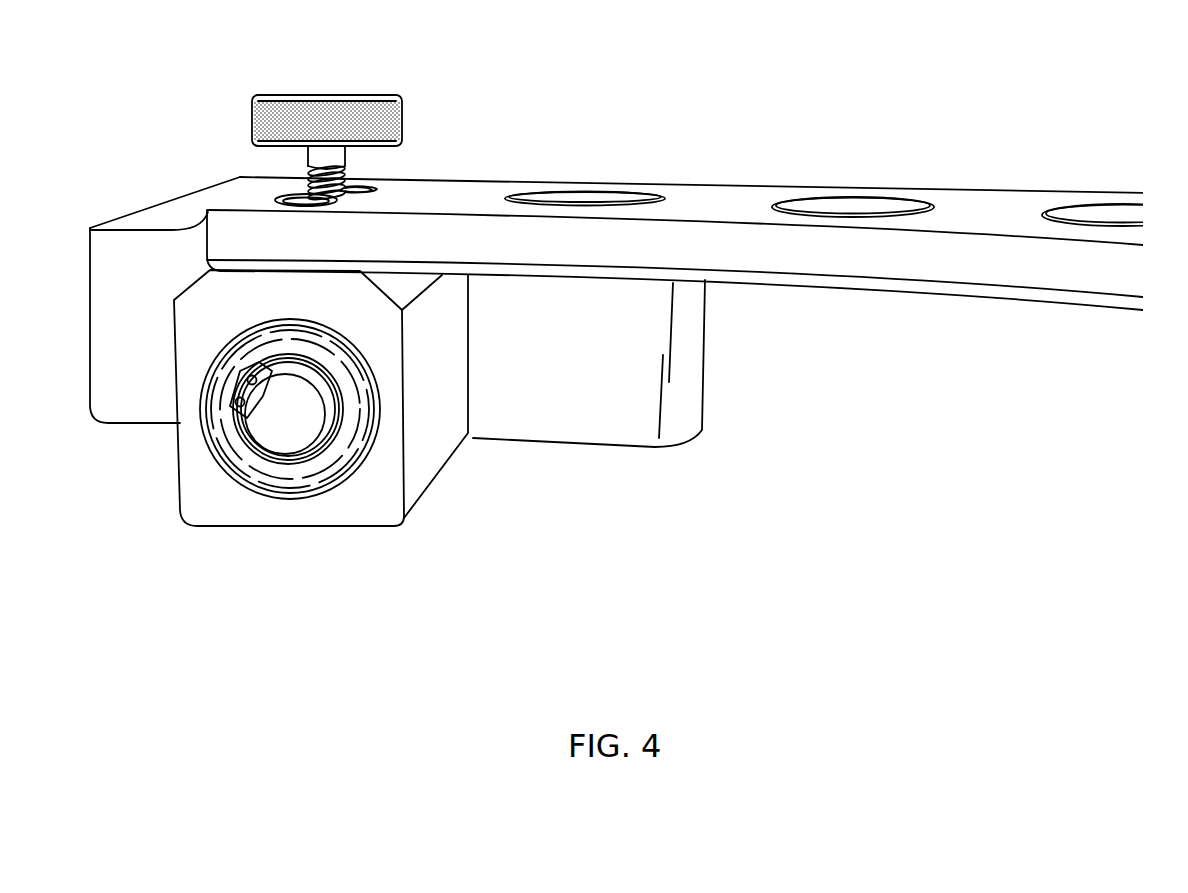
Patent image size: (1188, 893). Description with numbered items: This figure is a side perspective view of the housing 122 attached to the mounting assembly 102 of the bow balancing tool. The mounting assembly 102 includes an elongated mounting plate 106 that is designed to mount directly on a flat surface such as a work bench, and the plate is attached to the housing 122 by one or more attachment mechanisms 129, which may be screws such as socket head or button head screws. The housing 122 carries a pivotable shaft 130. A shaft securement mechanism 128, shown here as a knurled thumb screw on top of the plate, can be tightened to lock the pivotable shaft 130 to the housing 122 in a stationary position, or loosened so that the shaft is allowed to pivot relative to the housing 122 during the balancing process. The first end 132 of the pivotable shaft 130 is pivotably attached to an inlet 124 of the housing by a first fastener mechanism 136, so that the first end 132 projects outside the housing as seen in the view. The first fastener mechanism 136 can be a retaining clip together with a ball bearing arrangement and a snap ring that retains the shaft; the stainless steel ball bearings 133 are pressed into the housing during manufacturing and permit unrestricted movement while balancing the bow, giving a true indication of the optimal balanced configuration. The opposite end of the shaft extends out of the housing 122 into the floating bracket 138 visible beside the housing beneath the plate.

The mounting assembly 102 is at (930, 190).
The elongated mounting plate 106 is at (659, 183).
The housing 122 is at (428, 432).
The inlet 124 is at (207, 442).
The shaft securement mechanism 128 is at (313, 94).
The attachment mechanisms 129 is at (288, 198).
The pivotable shaft 130 is at (284, 432).
The first end 132 is at (268, 437).
The stainless steel ball bearings 133 is at (287, 467).
The first fastener mechanism 136 is at (328, 417).
The floating bracket 138 is at (683, 430).